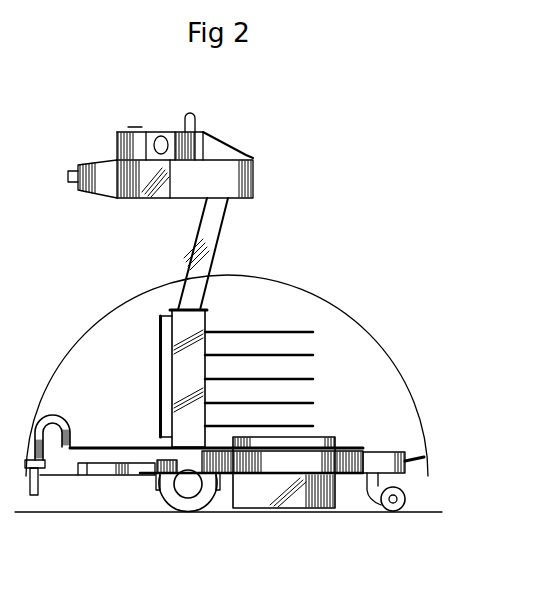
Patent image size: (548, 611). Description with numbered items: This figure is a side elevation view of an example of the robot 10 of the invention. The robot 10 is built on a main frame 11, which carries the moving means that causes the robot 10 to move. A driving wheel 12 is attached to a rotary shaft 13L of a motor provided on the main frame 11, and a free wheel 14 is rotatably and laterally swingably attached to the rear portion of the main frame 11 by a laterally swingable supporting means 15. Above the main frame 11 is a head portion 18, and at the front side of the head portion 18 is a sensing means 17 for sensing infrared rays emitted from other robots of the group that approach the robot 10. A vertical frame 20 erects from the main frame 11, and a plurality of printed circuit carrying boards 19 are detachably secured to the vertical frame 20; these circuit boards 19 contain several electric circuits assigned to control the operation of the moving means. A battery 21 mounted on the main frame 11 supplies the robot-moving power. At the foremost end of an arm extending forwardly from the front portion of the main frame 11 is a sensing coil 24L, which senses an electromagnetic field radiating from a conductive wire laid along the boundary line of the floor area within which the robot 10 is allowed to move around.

The robot 10 is at (112, 292).
The main frame 11 is at (330, 463).
The driving wheel 12 is at (202, 497).
The rotary shaft 13L is at (175, 482).
The free wheel 14 is at (404, 510).
The laterally swingable supporting means 15 is at (370, 497).
The sensing means 17 is at (111, 142).
The head portion 18 is at (253, 183).
The printed circuit carrying boards 19 is at (274, 328).
The vertical frame 20 is at (182, 355).
The battery 21 is at (280, 493).
The sensing coil 24L is at (40, 482).